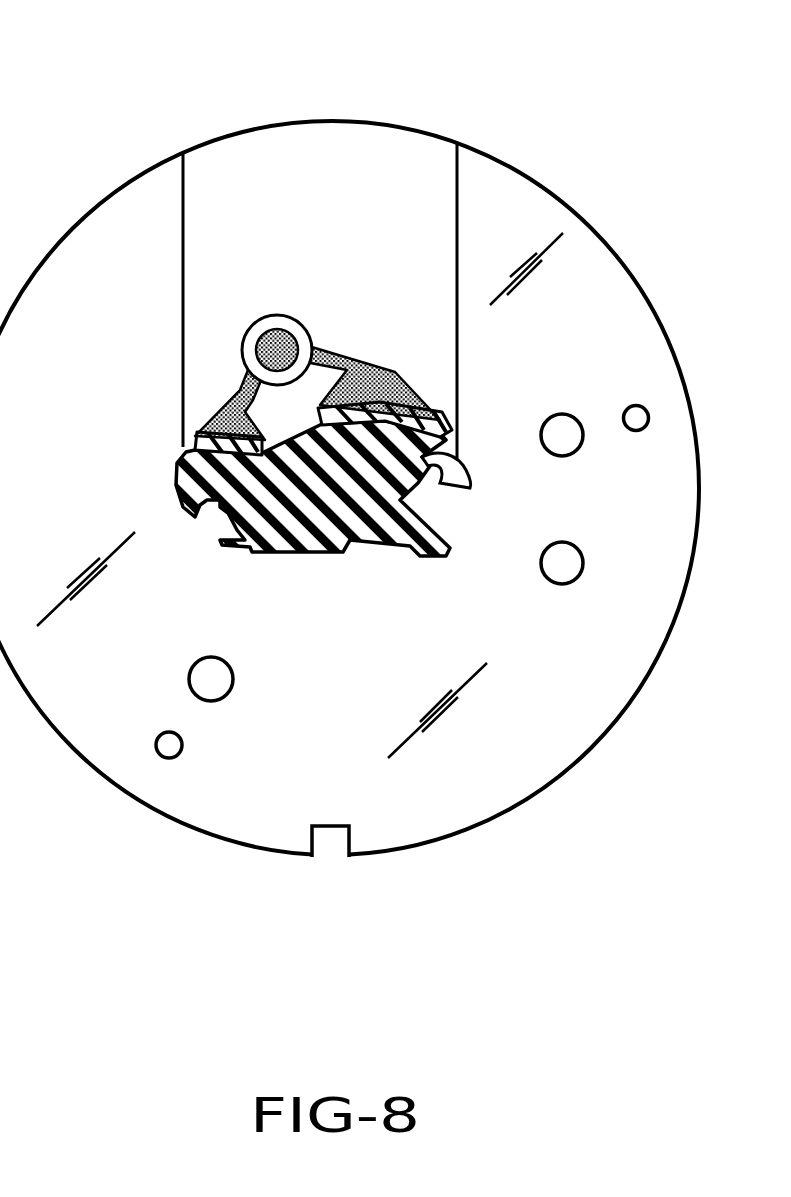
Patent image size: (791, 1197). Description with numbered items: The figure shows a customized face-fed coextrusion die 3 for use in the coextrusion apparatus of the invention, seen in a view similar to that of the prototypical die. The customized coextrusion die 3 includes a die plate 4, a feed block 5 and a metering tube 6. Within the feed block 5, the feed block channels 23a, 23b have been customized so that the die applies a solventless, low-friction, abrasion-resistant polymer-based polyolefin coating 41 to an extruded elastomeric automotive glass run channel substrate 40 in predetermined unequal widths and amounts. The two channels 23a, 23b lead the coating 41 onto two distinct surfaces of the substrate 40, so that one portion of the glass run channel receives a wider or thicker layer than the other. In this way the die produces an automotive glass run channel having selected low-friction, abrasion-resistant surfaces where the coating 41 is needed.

The customized face-fed coextrusion die 3 is at (457, 115).
The die plate 4 is at (587, 758).
The feed block 5 is at (353, 142).
The metering tube 6 is at (267, 322).
The feed block channel 23a is at (240, 397).
The feed block channel 23b is at (350, 360).
The elastomeric automotive glass run channel substrate 40 is at (286, 533).
The polymer-based polyolefin coating 41 is at (507, 365).